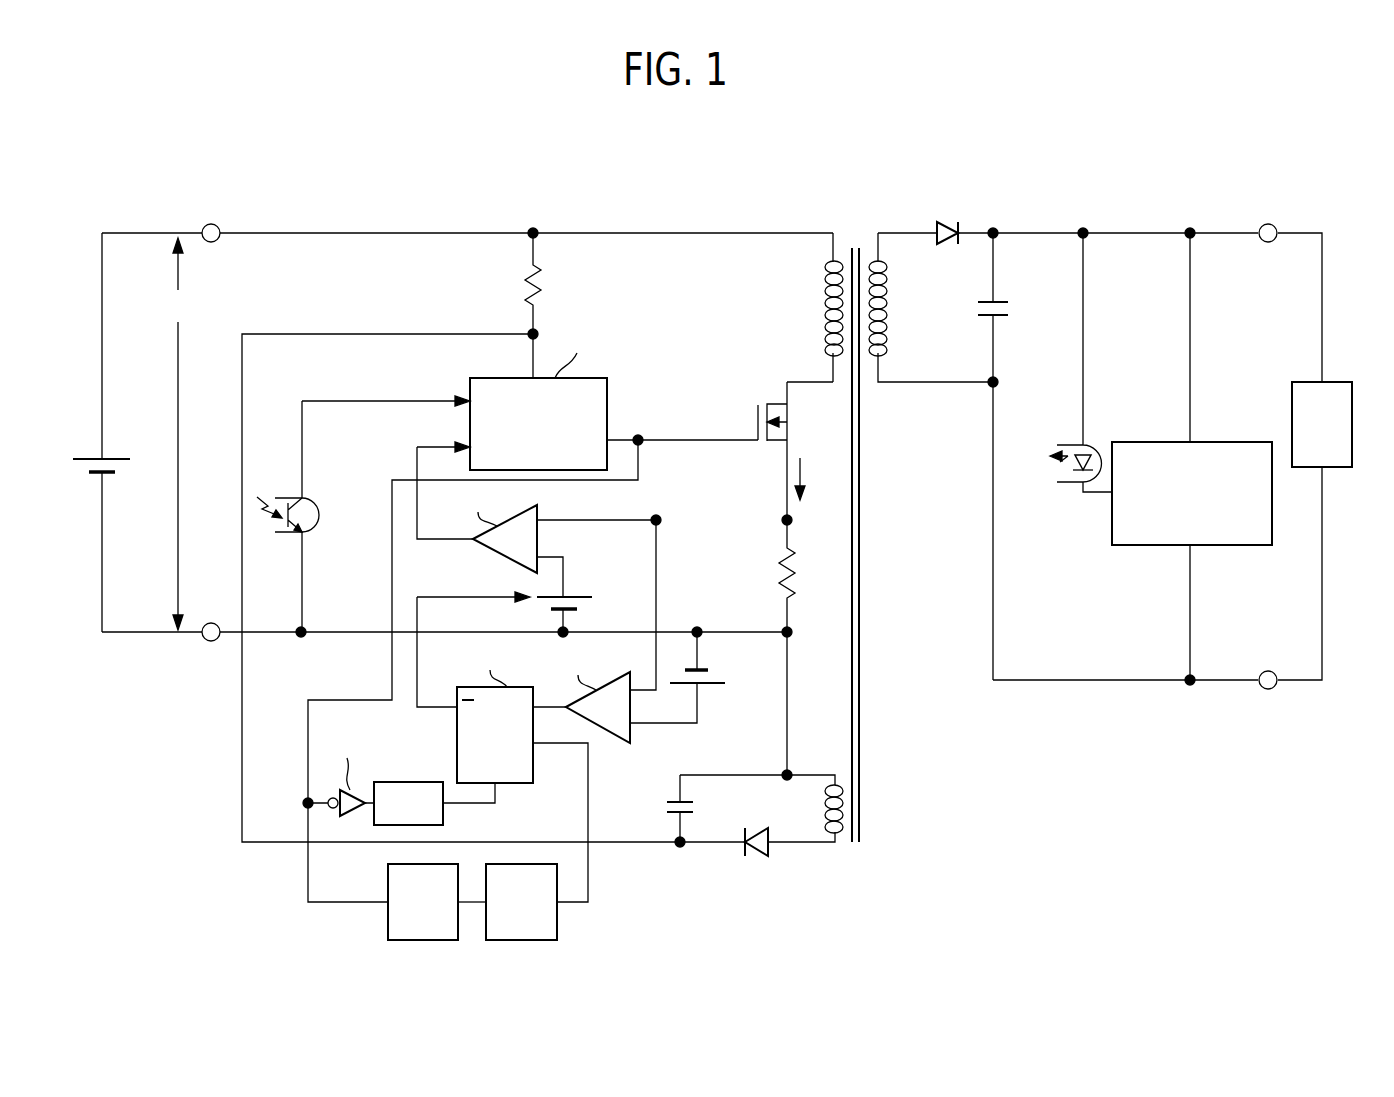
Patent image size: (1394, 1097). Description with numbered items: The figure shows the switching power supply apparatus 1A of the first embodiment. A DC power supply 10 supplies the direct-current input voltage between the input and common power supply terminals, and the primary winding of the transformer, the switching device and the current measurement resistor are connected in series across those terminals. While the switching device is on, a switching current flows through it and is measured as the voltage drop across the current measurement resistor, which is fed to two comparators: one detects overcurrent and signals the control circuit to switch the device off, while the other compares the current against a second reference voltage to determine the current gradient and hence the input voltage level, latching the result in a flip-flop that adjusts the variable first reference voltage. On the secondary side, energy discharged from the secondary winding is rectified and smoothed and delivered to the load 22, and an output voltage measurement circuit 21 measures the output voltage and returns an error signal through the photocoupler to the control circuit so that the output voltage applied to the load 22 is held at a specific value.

The switching power supply apparatus 1A is at (692, 178).
The DC power supply 10 is at (85, 459).
The output voltage measurement circuit 21 is at (1215, 442).
The load 22 is at (1338, 382).